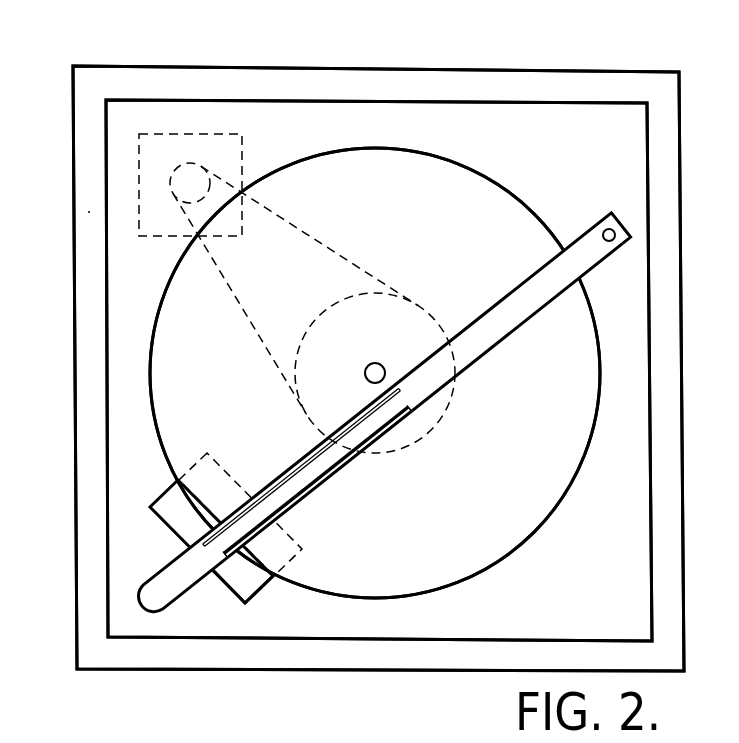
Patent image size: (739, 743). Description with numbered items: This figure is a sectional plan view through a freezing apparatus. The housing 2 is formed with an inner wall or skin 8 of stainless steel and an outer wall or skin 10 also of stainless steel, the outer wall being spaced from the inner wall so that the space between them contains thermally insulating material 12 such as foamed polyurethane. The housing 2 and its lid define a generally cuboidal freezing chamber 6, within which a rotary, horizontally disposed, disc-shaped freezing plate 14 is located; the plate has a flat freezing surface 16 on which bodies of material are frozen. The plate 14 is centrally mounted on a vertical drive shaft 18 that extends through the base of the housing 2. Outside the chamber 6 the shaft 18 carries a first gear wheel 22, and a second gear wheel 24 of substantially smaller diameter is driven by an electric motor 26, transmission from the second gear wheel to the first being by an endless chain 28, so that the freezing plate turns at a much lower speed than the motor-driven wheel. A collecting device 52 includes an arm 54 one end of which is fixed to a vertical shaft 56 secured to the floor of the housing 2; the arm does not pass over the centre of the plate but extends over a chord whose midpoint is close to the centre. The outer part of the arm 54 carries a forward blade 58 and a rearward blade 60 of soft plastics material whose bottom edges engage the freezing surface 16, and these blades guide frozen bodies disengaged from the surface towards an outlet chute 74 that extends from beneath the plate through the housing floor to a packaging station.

The housing 2 is at (60, 360).
The freezing chamber 6 is at (612, 593).
The inner wall or skin 8 is at (106, 165).
The outer wall or skin 10 is at (75, 274).
The thermally insulating material 12 is at (88, 212).
The freezing plate 14 is at (615, 359).
The freezing surface 16 is at (563, 428).
The drive shaft 18 is at (365, 373).
The first gear wheel 22 is at (443, 420).
The second gear wheel 24 is at (192, 165).
The electric motor 26 is at (233, 134).
The endless chain 28 is at (333, 243).
The collecting device 52 is at (327, 505).
The arm 54 is at (592, 252).
The vertical shaft 56 is at (630, 236).
The forward blade 58 is at (188, 524).
The rearward blade 60 is at (253, 497).
The outlet chute 74 is at (226, 592).